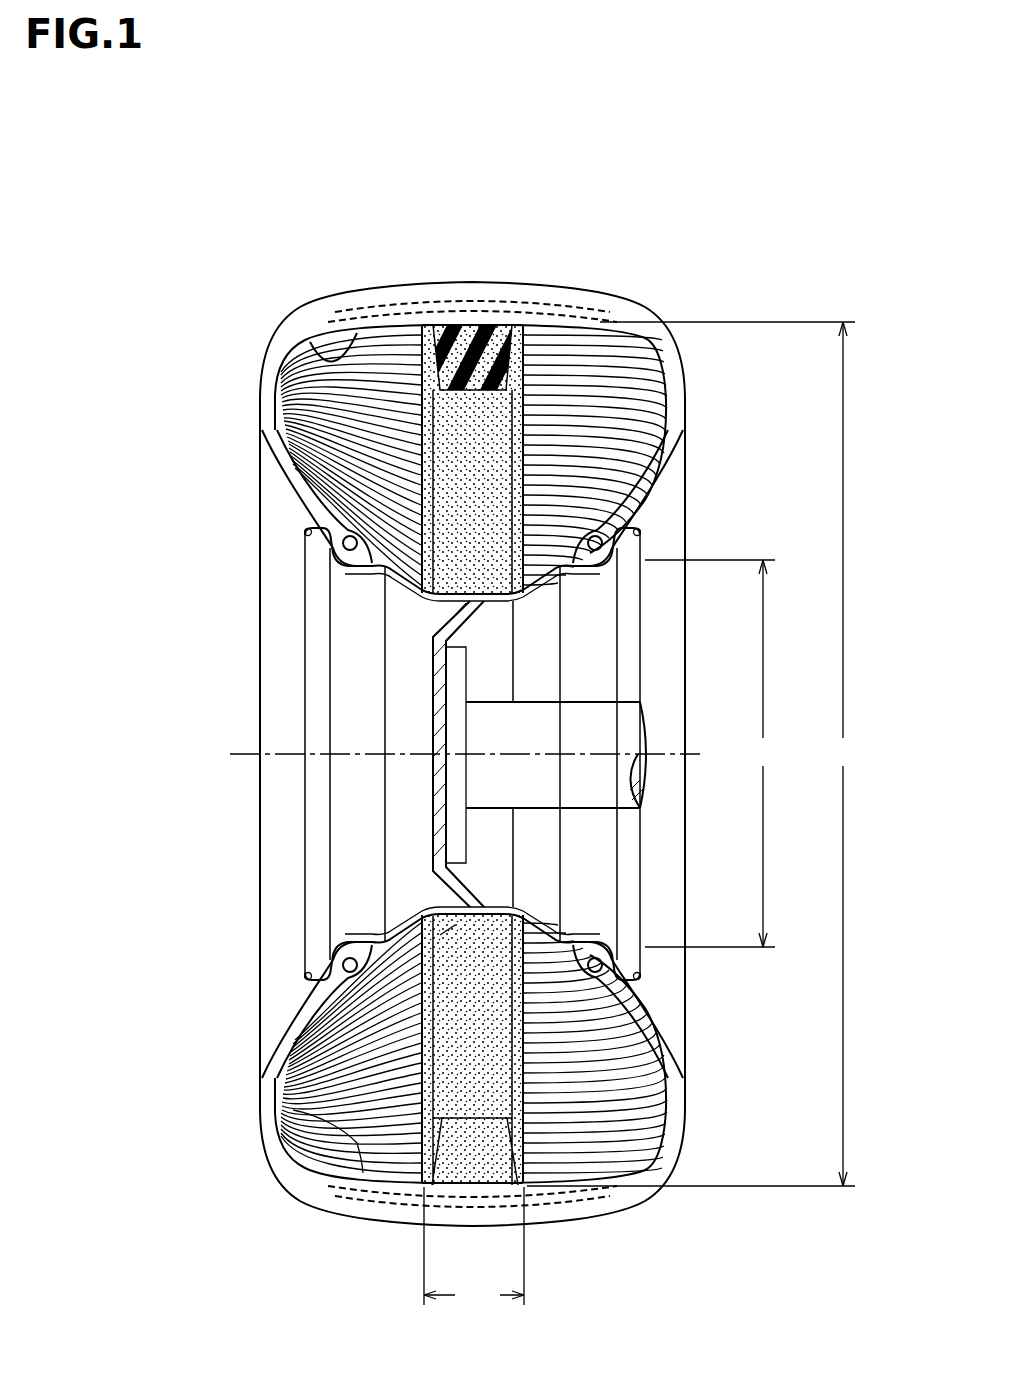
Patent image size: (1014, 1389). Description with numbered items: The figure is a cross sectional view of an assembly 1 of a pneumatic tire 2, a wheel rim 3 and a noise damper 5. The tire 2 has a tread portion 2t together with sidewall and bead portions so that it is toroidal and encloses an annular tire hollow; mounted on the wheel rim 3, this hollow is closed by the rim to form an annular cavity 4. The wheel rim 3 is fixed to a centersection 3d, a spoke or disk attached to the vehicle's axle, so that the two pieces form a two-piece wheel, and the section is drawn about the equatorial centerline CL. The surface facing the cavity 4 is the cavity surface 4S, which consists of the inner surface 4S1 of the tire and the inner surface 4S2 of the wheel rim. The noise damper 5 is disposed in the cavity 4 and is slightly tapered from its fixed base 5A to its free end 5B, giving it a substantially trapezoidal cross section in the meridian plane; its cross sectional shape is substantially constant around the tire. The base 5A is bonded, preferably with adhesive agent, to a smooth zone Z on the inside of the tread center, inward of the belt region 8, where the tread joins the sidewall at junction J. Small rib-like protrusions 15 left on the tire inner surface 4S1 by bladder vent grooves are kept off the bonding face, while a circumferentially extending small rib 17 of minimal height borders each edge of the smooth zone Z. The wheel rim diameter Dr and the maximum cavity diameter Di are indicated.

The pneumatic tire and rim assembly 1 is at (693, 212).
The pneumatic tire 2 is at (262, 465).
The tread portion 2t is at (471, 281).
The wheel rim 3 is at (372, 578).
The centersection 3d is at (436, 690).
The cavity 4 is at (585, 1076).
The cavity surface 4S is at (110, 1022).
The inner surface of the tire 4S1 is at (363, 1173).
The inner surface of the wheel rim 4S2 is at (457, 925).
The noise damper 5 is at (440, 365).
The fixed base 5A is at (500, 328).
The free end 5B is at (440, 410).
The belt layer 8 is at (360, 1207).
The small rib-like protrusions 15 is at (580, 373).
The small rib 17 is at (523, 455).
The junction J is at (312, 343).
The tire equator center line CL is at (250, 752).
The wheel rim diameter Dr is at (713, 753).
The maximum diameter of the cavity Di is at (693, 754).
The smooth zone Z is at (474, 1249).